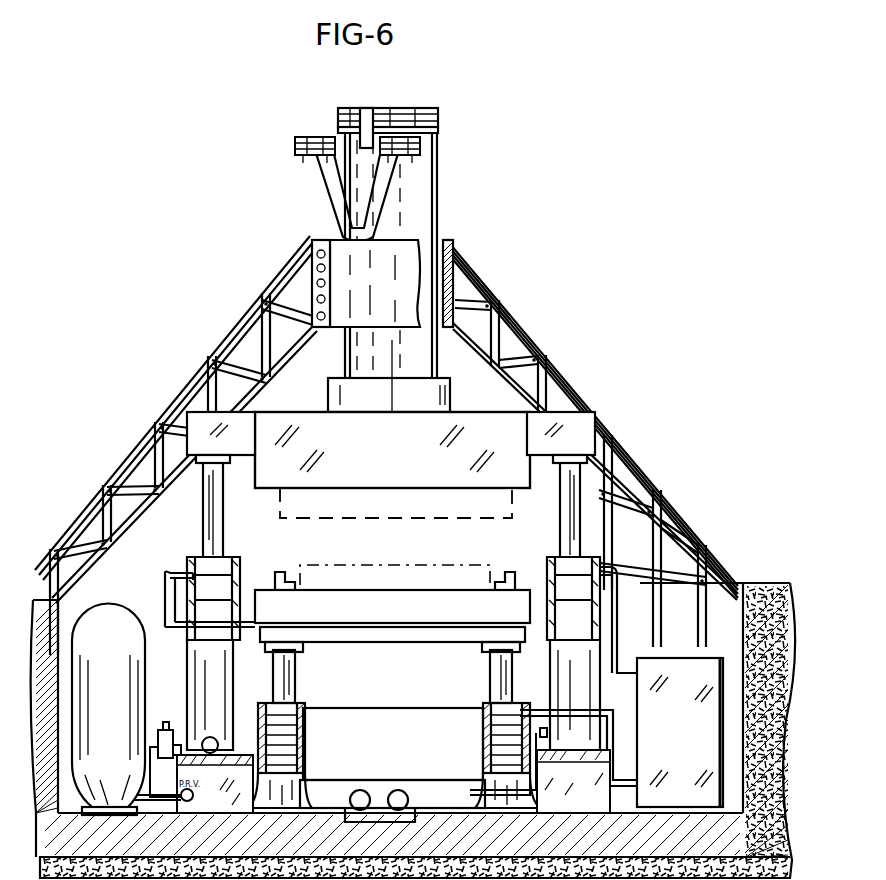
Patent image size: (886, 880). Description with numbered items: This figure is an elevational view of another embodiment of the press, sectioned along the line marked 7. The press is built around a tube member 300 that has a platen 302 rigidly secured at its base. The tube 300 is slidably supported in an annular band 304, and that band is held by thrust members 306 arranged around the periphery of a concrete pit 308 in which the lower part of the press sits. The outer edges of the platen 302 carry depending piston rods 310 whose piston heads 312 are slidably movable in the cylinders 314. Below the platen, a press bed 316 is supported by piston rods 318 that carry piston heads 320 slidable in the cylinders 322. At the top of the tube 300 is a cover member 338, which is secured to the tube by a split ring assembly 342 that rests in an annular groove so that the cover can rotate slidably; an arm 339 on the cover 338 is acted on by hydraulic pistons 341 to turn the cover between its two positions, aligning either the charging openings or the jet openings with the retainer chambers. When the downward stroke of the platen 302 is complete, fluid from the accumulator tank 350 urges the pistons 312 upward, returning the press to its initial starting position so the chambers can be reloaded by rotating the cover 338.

The tube member 300 is at (428, 182).
The platen 302 is at (405, 478).
The annular band 304 is at (402, 256).
The thrust members 306 is at (565, 372).
The concrete pit 308 is at (712, 643).
The piston rods 310 is at (578, 531).
The piston heads 312 is at (558, 562).
The cylinders 314 is at (560, 601).
The press bed 316 is at (414, 618).
The piston rods 318 is at (497, 671).
The piston heads 320 is at (491, 733).
The cylinders 322 is at (505, 770).
The cover member 338 is at (440, 112).
The arm 339 is at (372, 108).
The hydraulic pistons 341 is at (297, 149).
The split ring assembly 342 is at (440, 129).
The accumulator tank 350 is at (120, 672).
The section line 7- 7 is at (384, 441).